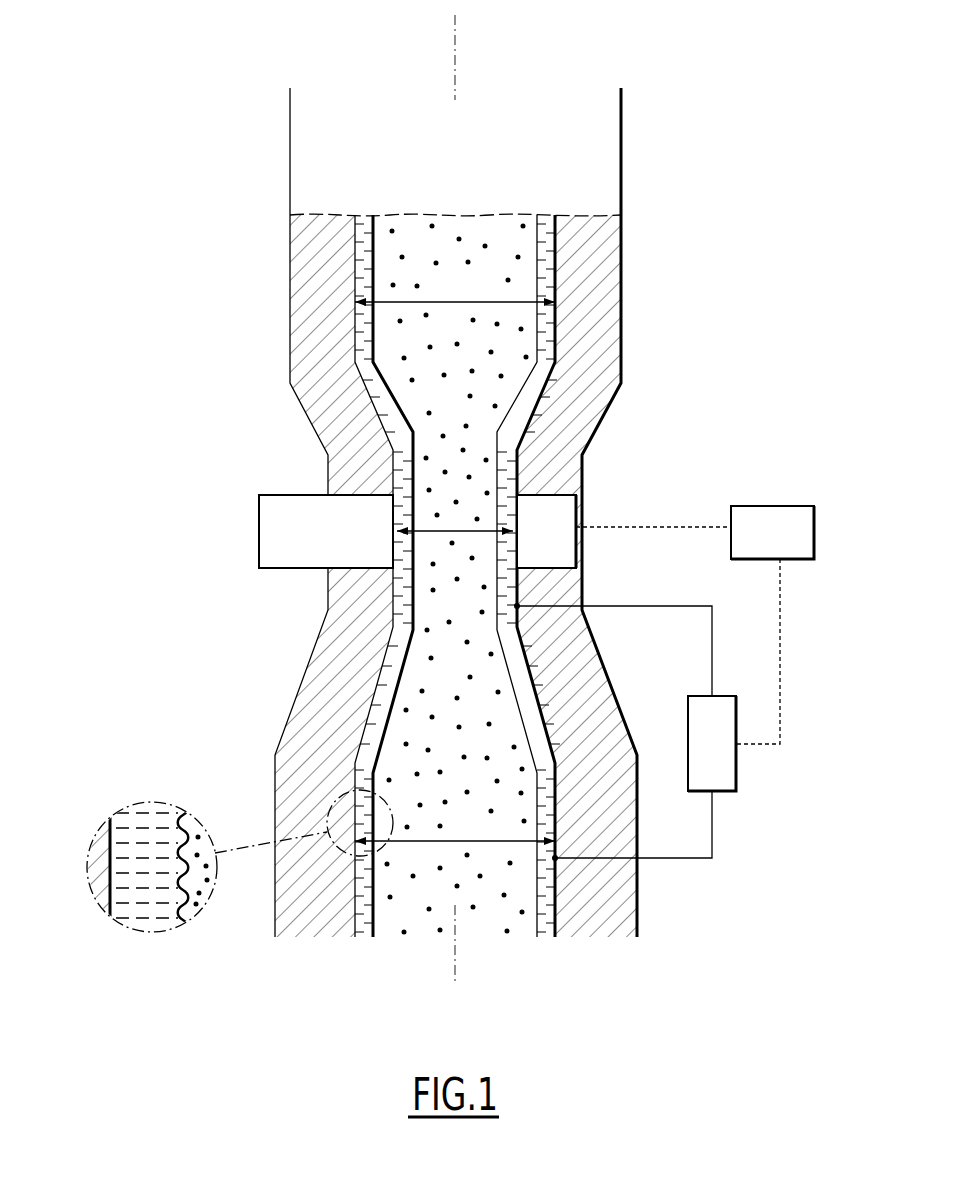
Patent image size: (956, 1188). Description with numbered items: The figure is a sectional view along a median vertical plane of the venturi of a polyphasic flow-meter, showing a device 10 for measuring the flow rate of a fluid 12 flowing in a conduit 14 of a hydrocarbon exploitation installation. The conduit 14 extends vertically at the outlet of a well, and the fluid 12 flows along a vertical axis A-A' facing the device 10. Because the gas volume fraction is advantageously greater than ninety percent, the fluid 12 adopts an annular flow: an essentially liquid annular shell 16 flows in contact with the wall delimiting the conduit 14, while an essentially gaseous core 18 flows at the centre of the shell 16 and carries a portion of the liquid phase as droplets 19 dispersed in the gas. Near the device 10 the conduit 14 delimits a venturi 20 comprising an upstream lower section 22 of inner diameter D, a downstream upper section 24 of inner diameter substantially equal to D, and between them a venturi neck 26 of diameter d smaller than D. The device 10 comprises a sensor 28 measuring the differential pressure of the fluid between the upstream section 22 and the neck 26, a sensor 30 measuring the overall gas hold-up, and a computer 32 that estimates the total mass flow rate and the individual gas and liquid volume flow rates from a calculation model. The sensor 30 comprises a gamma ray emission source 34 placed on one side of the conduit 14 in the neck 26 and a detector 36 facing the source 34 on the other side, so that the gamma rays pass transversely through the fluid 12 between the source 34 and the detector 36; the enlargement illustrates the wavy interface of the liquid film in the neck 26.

The device 10 is at (702, 383).
The fluid 12 is at (472, 207).
The conduit 14 is at (282, 157).
The essentially liquid annular shell 16 is at (548, 218).
The essentially gaseous core 18 is at (405, 214).
The droplets 19 is at (423, 723).
The venturi 20 is at (180, 595).
The upstream lower section 22 is at (290, 742).
The downstream upper section 24 is at (282, 325).
The venturi neck 26 is at (290, 468).
The sensor 28 is at (737, 785).
The sensor 30 is at (282, 531).
The computer 32 is at (762, 510).
The γ ray emission source 34 is at (267, 512).
The detector 36 is at (572, 505).